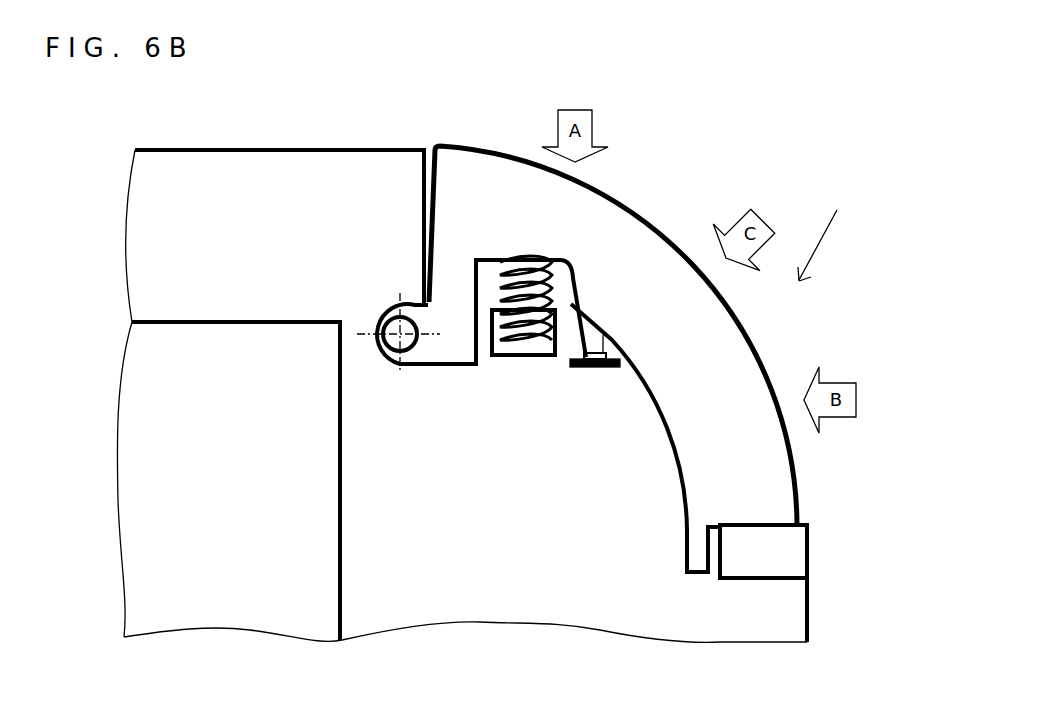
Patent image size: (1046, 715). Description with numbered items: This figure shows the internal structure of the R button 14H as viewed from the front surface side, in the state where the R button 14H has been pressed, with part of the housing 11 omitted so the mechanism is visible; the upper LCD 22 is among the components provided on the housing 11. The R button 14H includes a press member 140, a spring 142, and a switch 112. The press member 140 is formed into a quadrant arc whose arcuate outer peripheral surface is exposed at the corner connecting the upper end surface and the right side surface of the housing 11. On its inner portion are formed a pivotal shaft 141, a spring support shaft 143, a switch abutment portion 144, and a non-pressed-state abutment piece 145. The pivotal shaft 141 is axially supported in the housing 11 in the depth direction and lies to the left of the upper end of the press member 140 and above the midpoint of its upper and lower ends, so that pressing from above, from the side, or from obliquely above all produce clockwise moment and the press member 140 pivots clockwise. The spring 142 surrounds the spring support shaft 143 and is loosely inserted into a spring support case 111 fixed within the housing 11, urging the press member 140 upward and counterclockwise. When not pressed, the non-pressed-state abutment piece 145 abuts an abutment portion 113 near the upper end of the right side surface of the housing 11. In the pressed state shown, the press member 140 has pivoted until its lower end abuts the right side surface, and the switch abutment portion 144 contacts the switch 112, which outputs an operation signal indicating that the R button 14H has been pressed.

The housing 11 is at (303, 150).
The upper LCD 22 is at (208, 335).
The press member 140 is at (655, 228).
The pivotal shaft 141 is at (373, 350).
The spring 142 is at (503, 284).
The spring support shaft 143 is at (527, 268).
The switch abutment portion 144 is at (593, 325).
The non-pressed-state abutment piece 145 is at (693, 533).
The spring support case 111 is at (522, 353).
The switch 112 is at (573, 357).
The abutment portion 113 is at (733, 578).
The R button 14H is at (818, 198).